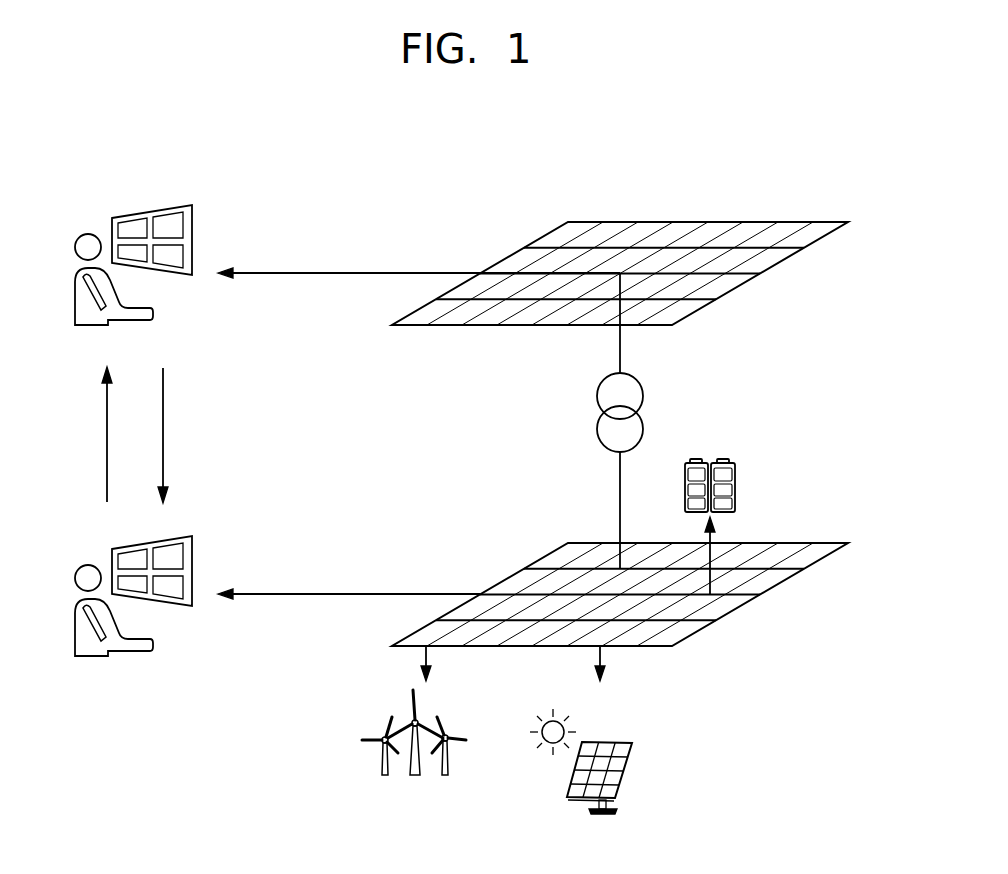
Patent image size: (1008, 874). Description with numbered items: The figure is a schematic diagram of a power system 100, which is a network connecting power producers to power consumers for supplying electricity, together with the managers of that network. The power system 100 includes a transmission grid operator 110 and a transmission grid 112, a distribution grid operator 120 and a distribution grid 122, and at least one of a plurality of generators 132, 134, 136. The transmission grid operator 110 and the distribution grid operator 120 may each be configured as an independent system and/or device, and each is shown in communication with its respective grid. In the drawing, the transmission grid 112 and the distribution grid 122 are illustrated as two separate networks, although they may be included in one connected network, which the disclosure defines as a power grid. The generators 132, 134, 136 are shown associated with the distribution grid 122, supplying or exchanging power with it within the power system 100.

The power system 100 is at (431, 841).
The transmission grid operator 110 is at (138, 212).
The transmission grid 112 is at (797, 220).
The distribution grid operator 120 is at (142, 542).
The distribution grid 122 is at (798, 542).
The generator 132 is at (373, 740).
The generator 134 is at (595, 740).
The generator 136 is at (723, 457).